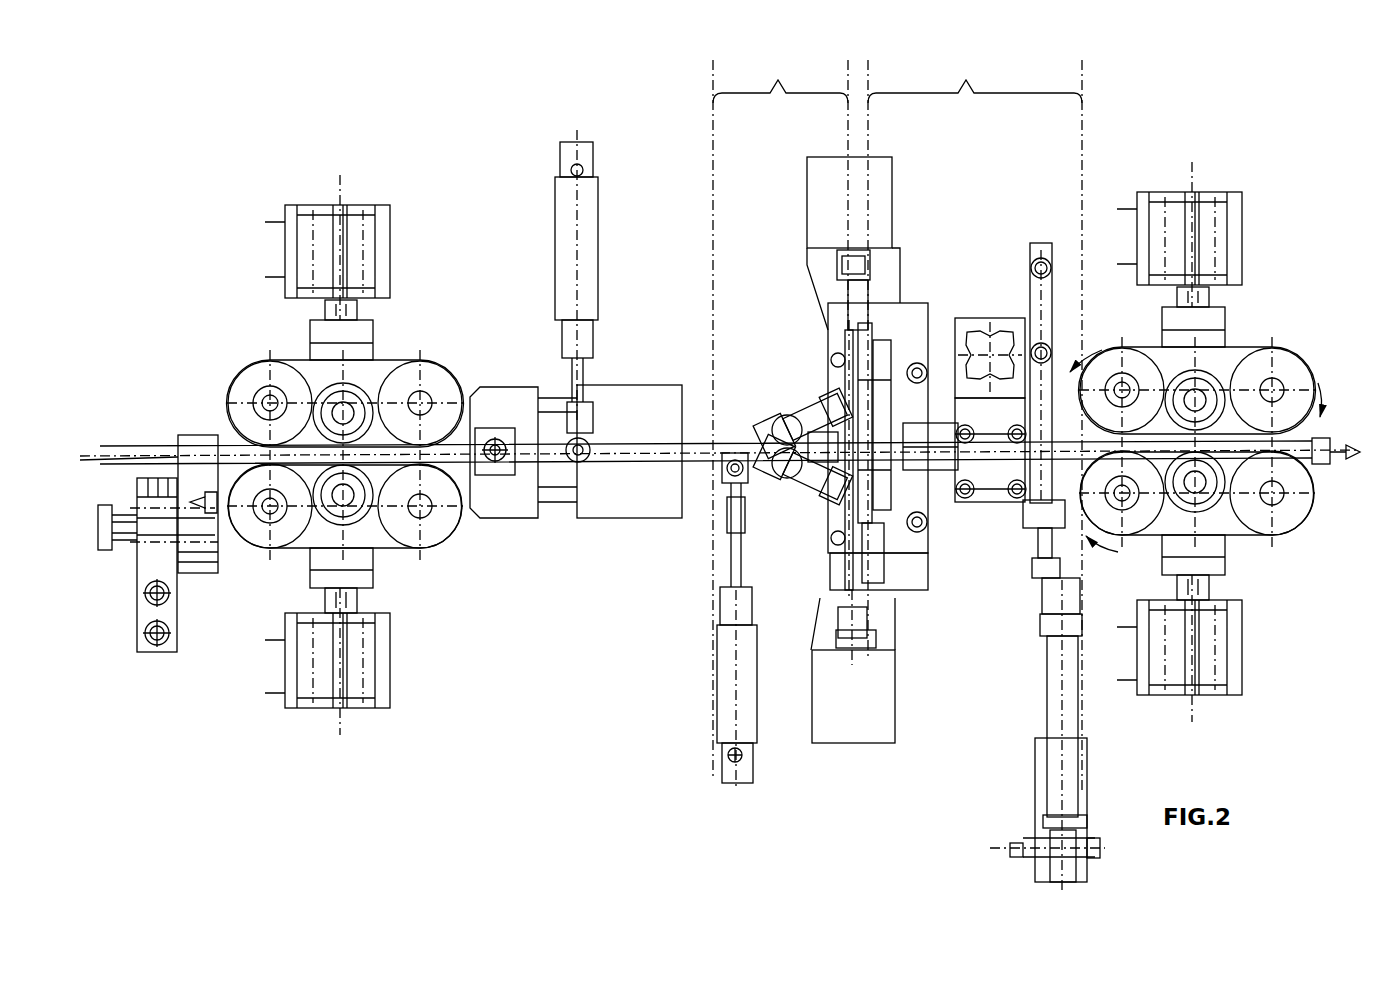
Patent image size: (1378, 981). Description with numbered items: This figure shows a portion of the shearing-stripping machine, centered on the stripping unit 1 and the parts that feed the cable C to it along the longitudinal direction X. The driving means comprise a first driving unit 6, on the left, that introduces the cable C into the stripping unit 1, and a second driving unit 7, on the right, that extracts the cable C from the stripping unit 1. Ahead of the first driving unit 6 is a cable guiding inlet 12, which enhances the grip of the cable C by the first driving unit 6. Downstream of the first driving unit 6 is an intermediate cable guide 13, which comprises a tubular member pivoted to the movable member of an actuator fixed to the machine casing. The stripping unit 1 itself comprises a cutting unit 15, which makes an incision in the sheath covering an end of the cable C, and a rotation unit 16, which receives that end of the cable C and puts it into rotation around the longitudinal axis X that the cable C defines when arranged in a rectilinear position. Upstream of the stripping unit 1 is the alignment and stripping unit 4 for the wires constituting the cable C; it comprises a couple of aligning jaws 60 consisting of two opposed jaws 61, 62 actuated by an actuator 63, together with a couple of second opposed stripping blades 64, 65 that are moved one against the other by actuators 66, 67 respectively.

The stripping unit 1 is at (966, 80).
The alignment and stripping unit 4 is at (778, 80).
The first driving unit 6 is at (268, 333).
The second driving unit 7 is at (1262, 312).
The cable guiding inlet 12 is at (145, 672).
The intermediate cable guide 13 is at (593, 543).
The cutting unit 15 is at (898, 362).
The rotation unit 16 is at (1033, 522).
The couple of aligning jaws 60 is at (780, 448).
The aligning jaw 61 is at (812, 408).
The aligning jaw 62 is at (820, 478).
The actuator 63 is at (690, 658).
The stripping blade 64 is at (848, 348).
The stripping blade 65 is at (858, 488).
The actuator 66 is at (876, 193).
The actuator 67 is at (873, 707).
The longitudinal direction X is at (90, 447).
The cable C is at (1322, 432).